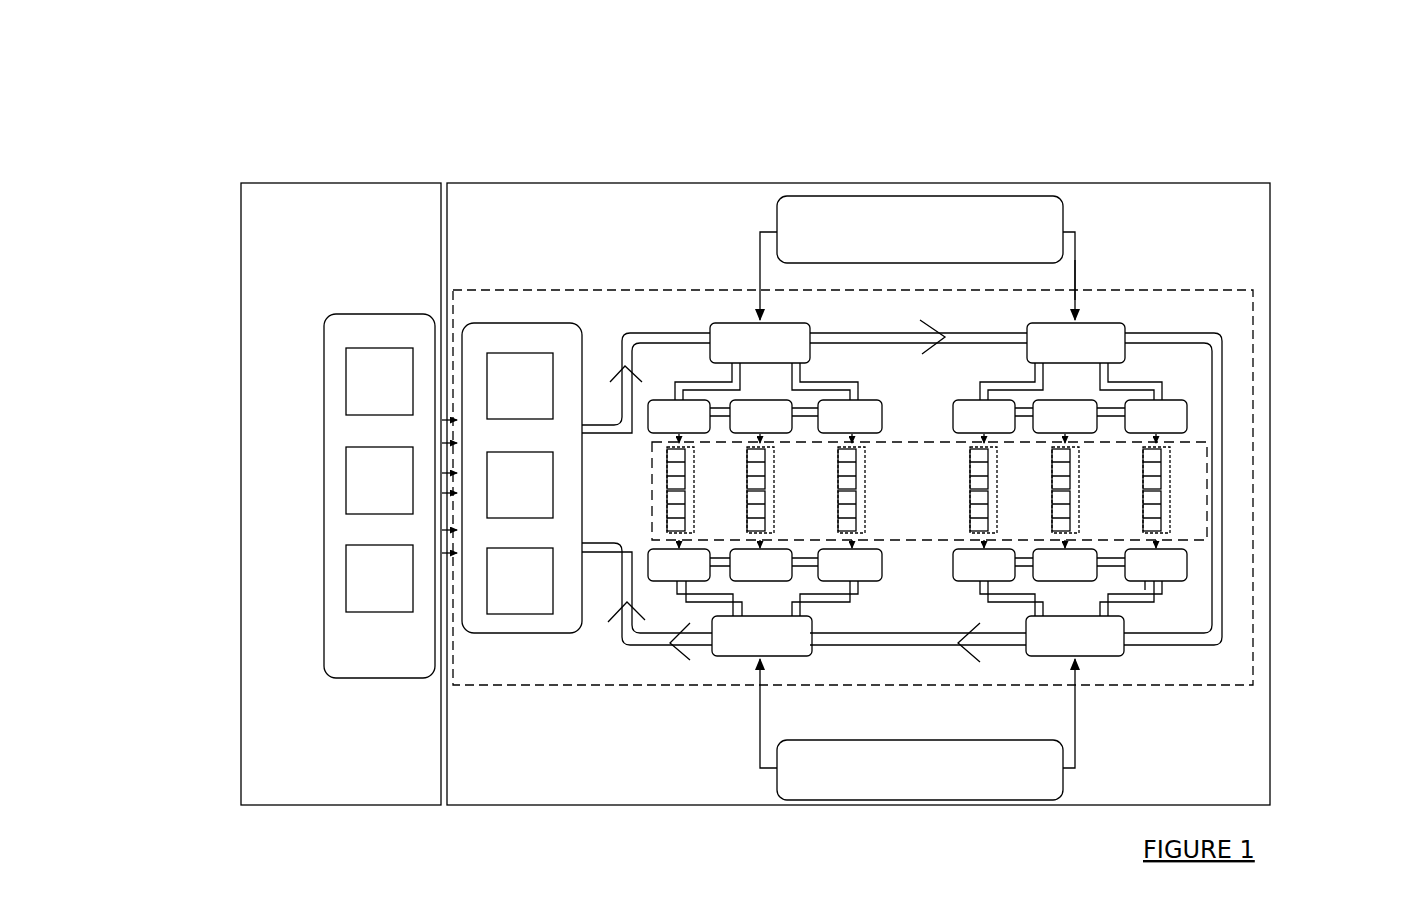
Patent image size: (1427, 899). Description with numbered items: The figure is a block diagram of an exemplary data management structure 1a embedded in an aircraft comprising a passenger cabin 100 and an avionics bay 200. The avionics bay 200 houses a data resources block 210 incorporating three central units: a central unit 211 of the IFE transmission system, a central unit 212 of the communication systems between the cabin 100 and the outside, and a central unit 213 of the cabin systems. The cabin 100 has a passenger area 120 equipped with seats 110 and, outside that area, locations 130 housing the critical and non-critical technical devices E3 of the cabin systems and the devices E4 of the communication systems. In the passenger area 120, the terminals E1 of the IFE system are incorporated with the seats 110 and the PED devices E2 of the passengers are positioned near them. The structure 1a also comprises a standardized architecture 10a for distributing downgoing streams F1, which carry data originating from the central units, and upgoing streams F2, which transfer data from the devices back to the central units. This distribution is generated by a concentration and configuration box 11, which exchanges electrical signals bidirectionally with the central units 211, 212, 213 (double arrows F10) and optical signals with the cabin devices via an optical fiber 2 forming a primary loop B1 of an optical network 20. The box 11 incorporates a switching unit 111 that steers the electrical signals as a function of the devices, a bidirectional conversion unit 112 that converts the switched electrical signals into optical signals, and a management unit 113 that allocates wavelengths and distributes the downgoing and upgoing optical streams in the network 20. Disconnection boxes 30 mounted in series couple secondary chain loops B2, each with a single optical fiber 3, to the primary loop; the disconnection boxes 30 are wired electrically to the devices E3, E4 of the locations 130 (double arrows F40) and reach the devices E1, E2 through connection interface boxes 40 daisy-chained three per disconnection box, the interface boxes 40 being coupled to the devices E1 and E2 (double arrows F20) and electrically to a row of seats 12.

The passenger cabin 100 is at (566, 238).
The avionics bay 200 is at (313, 222).
The data resources block 210 is at (378, 313).
The central unit of the IFE transmission system 211 is at (375, 377).
The central unit of the communication systems 212 is at (378, 474).
The central unit of the cabin systems 213 is at (378, 580).
The data management structure 1a is at (874, 106).
The standardized architecture 10a is at (468, 290).
The concentration and configuration box 11 is at (498, 323).
The switching unit 111 is at (512, 408).
The bidirectional conversion unit 112 is at (512, 502).
The management unit 113 is at (525, 603).
The seats 110 is at (680, 444).
The row of seats 12 is at (882, 472).
The passenger area 120 is at (932, 443).
The locations 130 is at (927, 198).
The optical fiber 2 is at (1217, 625).
The single optical fiber 3 is at (1158, 593).
The optical network 20 is at (643, 654).
The disconnection boxes 30 is at (722, 323).
The connection interface boxes 40 is at (835, 400).
The primary loop B1 is at (1221, 336).
The secondary chain loops B2 is at (1139, 614).
The terminals of the IFE system E1 is at (1163, 507).
The PED devices E2 is at (1158, 453).
The technical devices E3 is at (935, 222).
The devices of communication systems E4 is at (1030, 782).
The downgoing streams F1 is at (625, 365).
The upgoing streams F2 is at (627, 603).
The double arrows F10 is at (443, 553).
The double arrows F20 is at (676, 542).
The double arrows F40 is at (1077, 257).